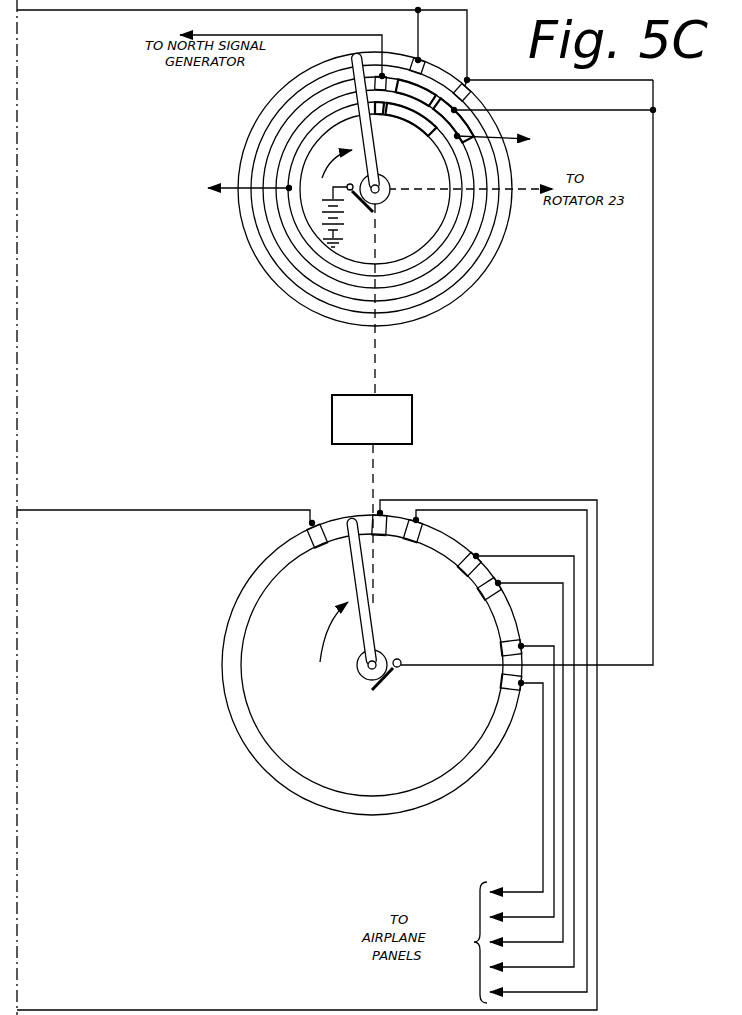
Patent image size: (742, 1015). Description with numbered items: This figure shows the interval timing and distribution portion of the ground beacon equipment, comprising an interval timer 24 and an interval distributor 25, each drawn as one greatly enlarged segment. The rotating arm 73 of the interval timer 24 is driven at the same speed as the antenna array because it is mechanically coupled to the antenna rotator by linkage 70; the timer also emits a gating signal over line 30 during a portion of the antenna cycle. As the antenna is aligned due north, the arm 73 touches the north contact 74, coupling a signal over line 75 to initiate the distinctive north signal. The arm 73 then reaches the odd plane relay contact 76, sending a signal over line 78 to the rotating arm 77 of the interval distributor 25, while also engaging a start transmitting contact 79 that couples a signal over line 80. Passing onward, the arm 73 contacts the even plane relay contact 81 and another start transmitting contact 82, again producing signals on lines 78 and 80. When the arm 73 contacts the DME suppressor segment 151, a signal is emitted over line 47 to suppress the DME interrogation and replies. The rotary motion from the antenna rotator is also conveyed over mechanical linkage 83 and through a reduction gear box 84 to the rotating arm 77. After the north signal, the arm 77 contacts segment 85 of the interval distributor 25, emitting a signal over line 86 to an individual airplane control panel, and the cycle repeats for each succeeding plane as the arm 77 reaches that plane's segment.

The line 80 is at (102, 10).
The line 75 is at (276, 35).
The north contact 74 is at (383, 76).
The start transmitting contact 79 is at (413, 73).
The odd plane relay contact 76 is at (418, 82).
The start transmitting contact 82 is at (470, 96).
The even plane relay contact 81 is at (462, 128).
The line 47 is at (514, 139).
The DME suppressor segment 151 is at (430, 132).
The rotating arm 73 is at (372, 153).
The linkage 70 is at (432, 194).
The line 30 is at (229, 190).
The interval timer 24 is at (482, 275).
The mechanical linkage 83 is at (376, 333).
The reduction gear box 84 is at (412, 417).
The segment 85 is at (374, 513).
The line 86 is at (534, 500).
The line 78 is at (530, 385).
The rotating arm 77 is at (356, 584).
The interval distributor 25 is at (380, 820).